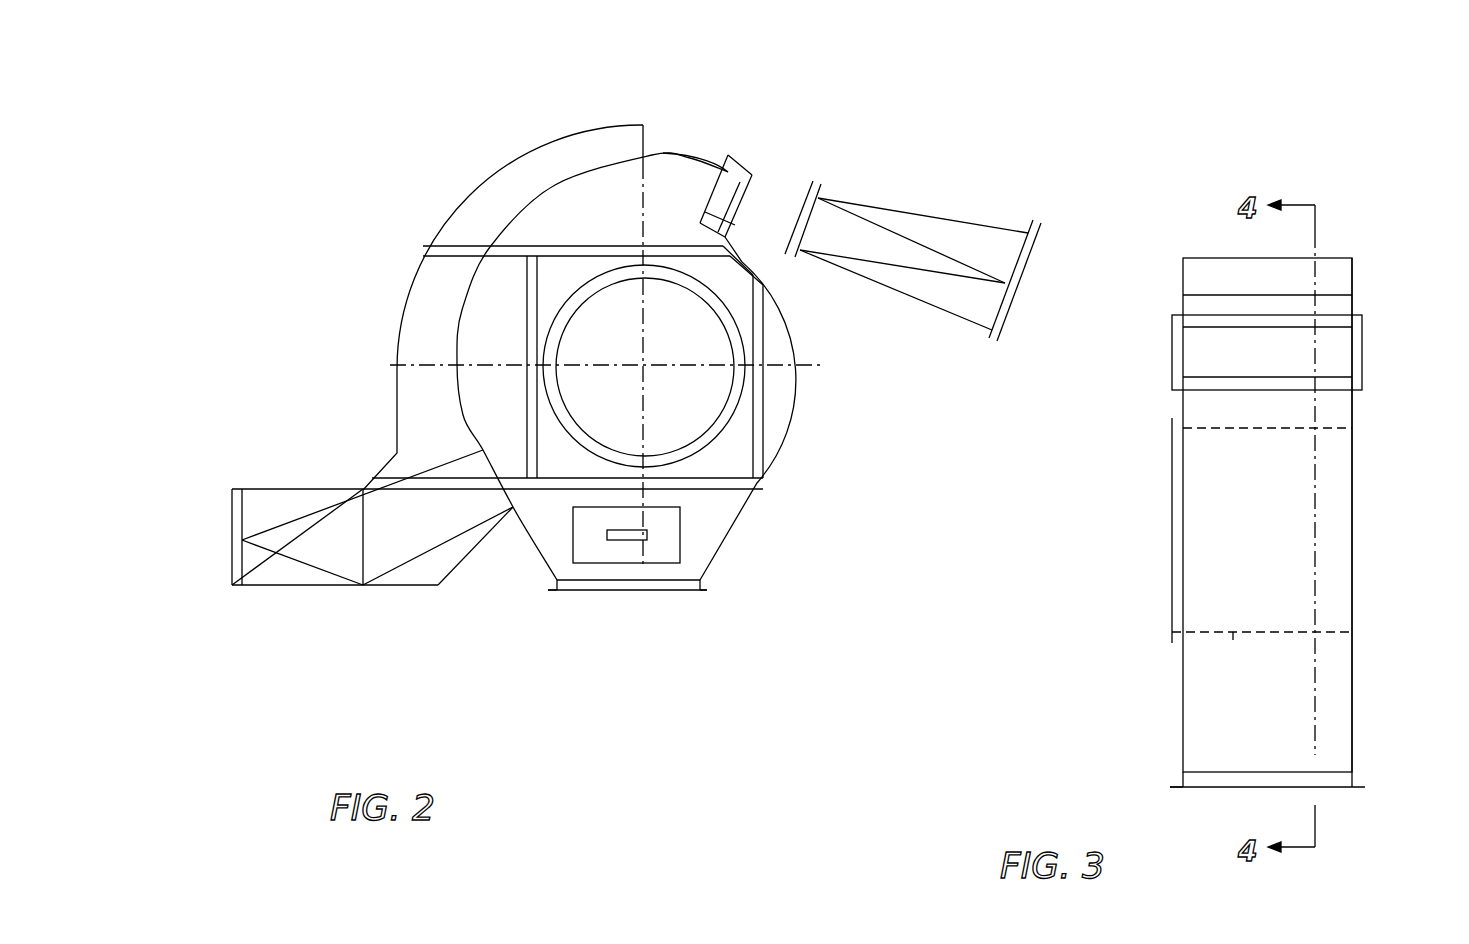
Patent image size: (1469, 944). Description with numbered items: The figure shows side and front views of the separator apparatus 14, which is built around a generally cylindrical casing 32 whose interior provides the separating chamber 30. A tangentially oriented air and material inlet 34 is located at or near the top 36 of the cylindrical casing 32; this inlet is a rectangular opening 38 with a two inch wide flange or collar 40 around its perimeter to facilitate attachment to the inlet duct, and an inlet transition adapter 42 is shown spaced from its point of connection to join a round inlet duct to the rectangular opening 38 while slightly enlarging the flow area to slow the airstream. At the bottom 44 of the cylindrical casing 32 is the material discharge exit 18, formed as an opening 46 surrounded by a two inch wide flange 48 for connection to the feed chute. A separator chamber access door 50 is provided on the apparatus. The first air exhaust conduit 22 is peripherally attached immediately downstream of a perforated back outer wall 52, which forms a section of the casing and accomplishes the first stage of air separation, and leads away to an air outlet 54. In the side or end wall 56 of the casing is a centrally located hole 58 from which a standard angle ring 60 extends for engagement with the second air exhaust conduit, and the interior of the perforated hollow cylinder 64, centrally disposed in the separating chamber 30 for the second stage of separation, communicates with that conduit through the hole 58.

In FIG. 2, the separator apparatus 14 is at (312, 193).
In FIG. 3, the separator apparatus 14 is at (1370, 125).
In FIG. 2, the material discharge exit 18 is at (637, 592).
In FIG. 3, the material discharge exit 18 is at (1233, 780).
In FIG. 2, the first air exhaust conduit 22 is at (418, 338).
In FIG. 3, the first air exhaust conduit 22 is at (1343, 270).
In FIG. 2, the separating chamber 30 is at (647, 430).
In FIG. 2, the cylindrical casing 32 is at (795, 403).
In FIG. 3, the cylindrical casing 32 is at (1352, 707).
In FIG. 2, the air and material inlet 34 is at (740, 205).
In FIG. 3, the air and material inlet 34 is at (1207, 348).
In FIG. 2, the top 36 is at (663, 153).
In FIG. 2, the rectangular opening 38 is at (750, 218).
In FIG. 3, the rectangular opening 38 is at (1283, 365).
In FIG. 2, the flange or collar 40 is at (752, 178).
In FIG. 3, the flange or collar 40 is at (1362, 353).
In FIG. 2, the inlet transition adapter 42 is at (961, 235).
In FIG. 2, the bottom 44 is at (547, 590).
In FIG. 2, the opening 46 is at (617, 600).
In FIG. 3, the opening 46 is at (1333, 790).
In FIG. 2, the flange 48 is at (707, 590).
In FIG. 3, the flange 48 is at (1173, 787).
In FIG. 2, the separator chamber access door 50 is at (665, 545).
In FIG. 2, the perforated back outer wall 52 is at (473, 273).
In FIG. 2, the air outlet 54 is at (226, 536).
In FIG. 2, the end wall 56 is at (513, 364).
In FIG. 2, the hole 58 is at (700, 424).
In FIG. 3, the hole 58 is at (1140, 527).
In FIG. 2, the angle ring 60 is at (743, 345).
In FIG. 3, the angle ring 60 is at (1172, 418).
In FIG. 3, the perforated hollow cylinder 64 is at (1233, 632).